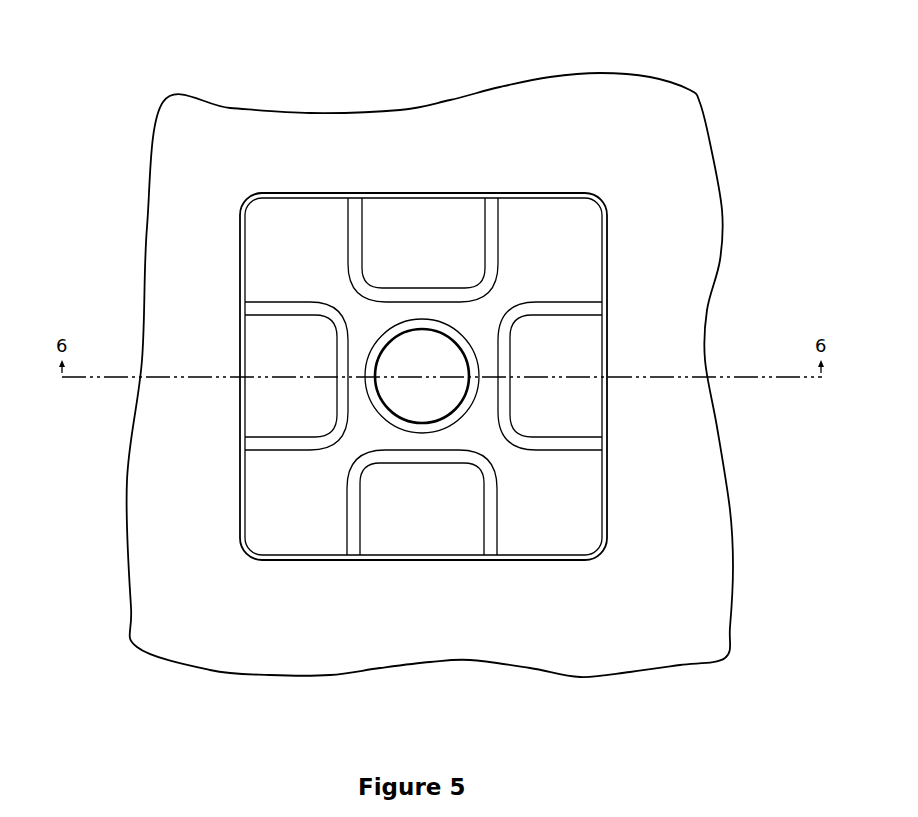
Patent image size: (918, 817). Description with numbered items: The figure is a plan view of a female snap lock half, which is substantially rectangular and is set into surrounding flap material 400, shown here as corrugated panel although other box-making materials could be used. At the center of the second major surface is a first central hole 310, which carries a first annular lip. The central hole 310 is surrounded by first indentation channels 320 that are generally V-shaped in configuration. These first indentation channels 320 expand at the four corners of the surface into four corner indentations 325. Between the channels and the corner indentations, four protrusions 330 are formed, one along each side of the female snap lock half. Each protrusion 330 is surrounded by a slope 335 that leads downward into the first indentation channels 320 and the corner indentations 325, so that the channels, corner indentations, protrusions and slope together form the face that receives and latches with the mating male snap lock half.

The first central hole 310 is at (462, 340).
The first indentation channels 320 is at (355, 316).
The corner indentations 325 is at (282, 225).
The protrusions 330 is at (307, 338).
The slope 335 is at (494, 212).
The surrounding flap material 400 is at (657, 538).